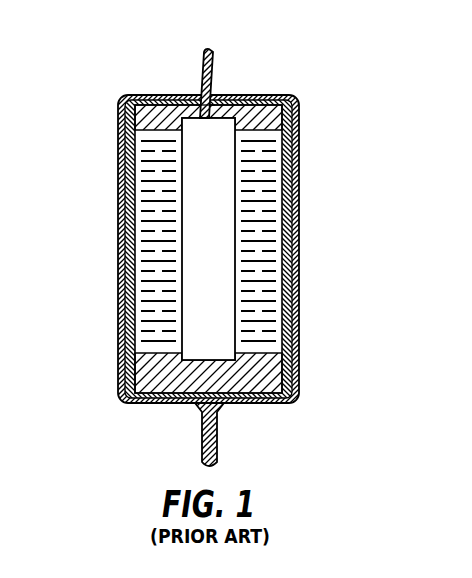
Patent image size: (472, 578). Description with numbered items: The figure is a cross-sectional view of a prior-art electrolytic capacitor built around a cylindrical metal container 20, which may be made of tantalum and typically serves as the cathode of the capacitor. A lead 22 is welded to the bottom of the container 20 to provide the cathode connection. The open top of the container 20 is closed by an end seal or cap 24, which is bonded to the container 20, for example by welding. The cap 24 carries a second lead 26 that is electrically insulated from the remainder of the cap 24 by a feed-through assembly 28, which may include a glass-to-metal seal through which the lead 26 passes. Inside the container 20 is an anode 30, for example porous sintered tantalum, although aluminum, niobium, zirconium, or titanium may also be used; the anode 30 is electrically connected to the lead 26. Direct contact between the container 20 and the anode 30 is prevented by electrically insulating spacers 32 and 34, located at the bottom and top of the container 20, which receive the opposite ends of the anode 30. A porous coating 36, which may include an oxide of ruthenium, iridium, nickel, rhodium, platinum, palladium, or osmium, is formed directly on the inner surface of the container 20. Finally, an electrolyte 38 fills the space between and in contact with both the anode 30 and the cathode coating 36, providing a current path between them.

The cylindrical metal container 20 is at (297, 272).
The lead 22 is at (217, 456).
The cap 24 is at (299, 100).
The second lead 26 is at (196, 96).
The feed-through assembly 28 is at (214, 92).
The anode 30 is at (212, 185).
The electrically insulating spacer 32 is at (145, 372).
The electrically insulating spacer 34 is at (140, 108).
The porous coating 36 is at (298, 238).
The electrolyte 38 is at (267, 332).